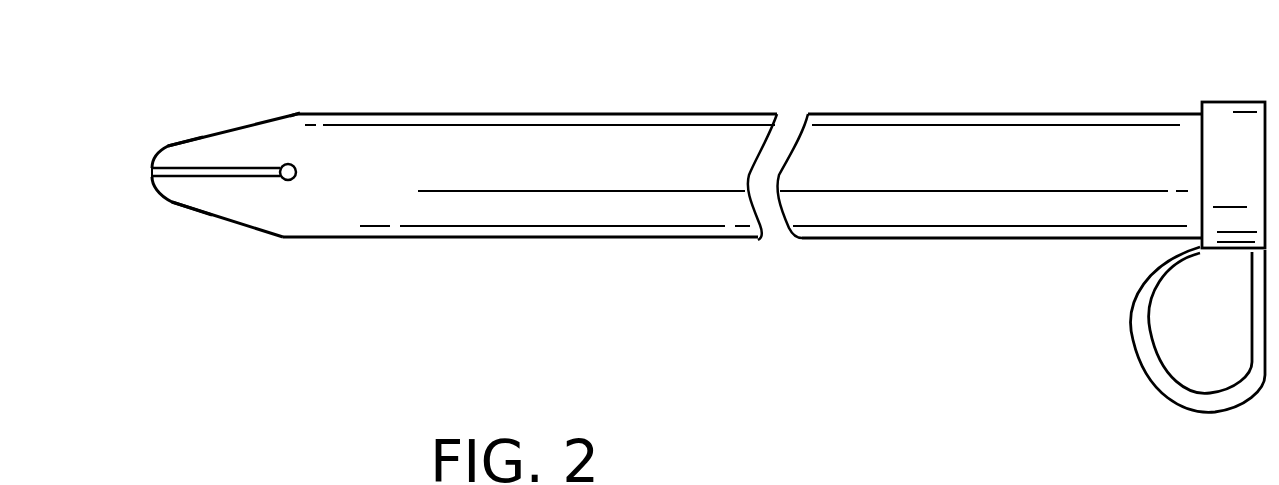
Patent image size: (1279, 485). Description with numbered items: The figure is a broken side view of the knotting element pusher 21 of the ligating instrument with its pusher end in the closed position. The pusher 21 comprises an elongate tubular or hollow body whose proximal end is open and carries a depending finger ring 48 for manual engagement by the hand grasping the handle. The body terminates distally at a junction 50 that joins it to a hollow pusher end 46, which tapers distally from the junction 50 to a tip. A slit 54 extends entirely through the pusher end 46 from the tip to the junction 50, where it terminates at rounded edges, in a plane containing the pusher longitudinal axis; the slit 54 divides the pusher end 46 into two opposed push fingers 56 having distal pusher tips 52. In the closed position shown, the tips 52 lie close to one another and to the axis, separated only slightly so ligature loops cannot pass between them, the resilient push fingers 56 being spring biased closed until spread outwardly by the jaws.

The knotting element pusher 21 is at (578, 140).
The pusher end 46 is at (265, 146).
The finger ring 48 is at (1138, 325).
The junction 50 is at (293, 112).
The pusher tips 52 is at (153, 157).
The slit 54 is at (214, 164).
The push fingers 56 is at (203, 134).